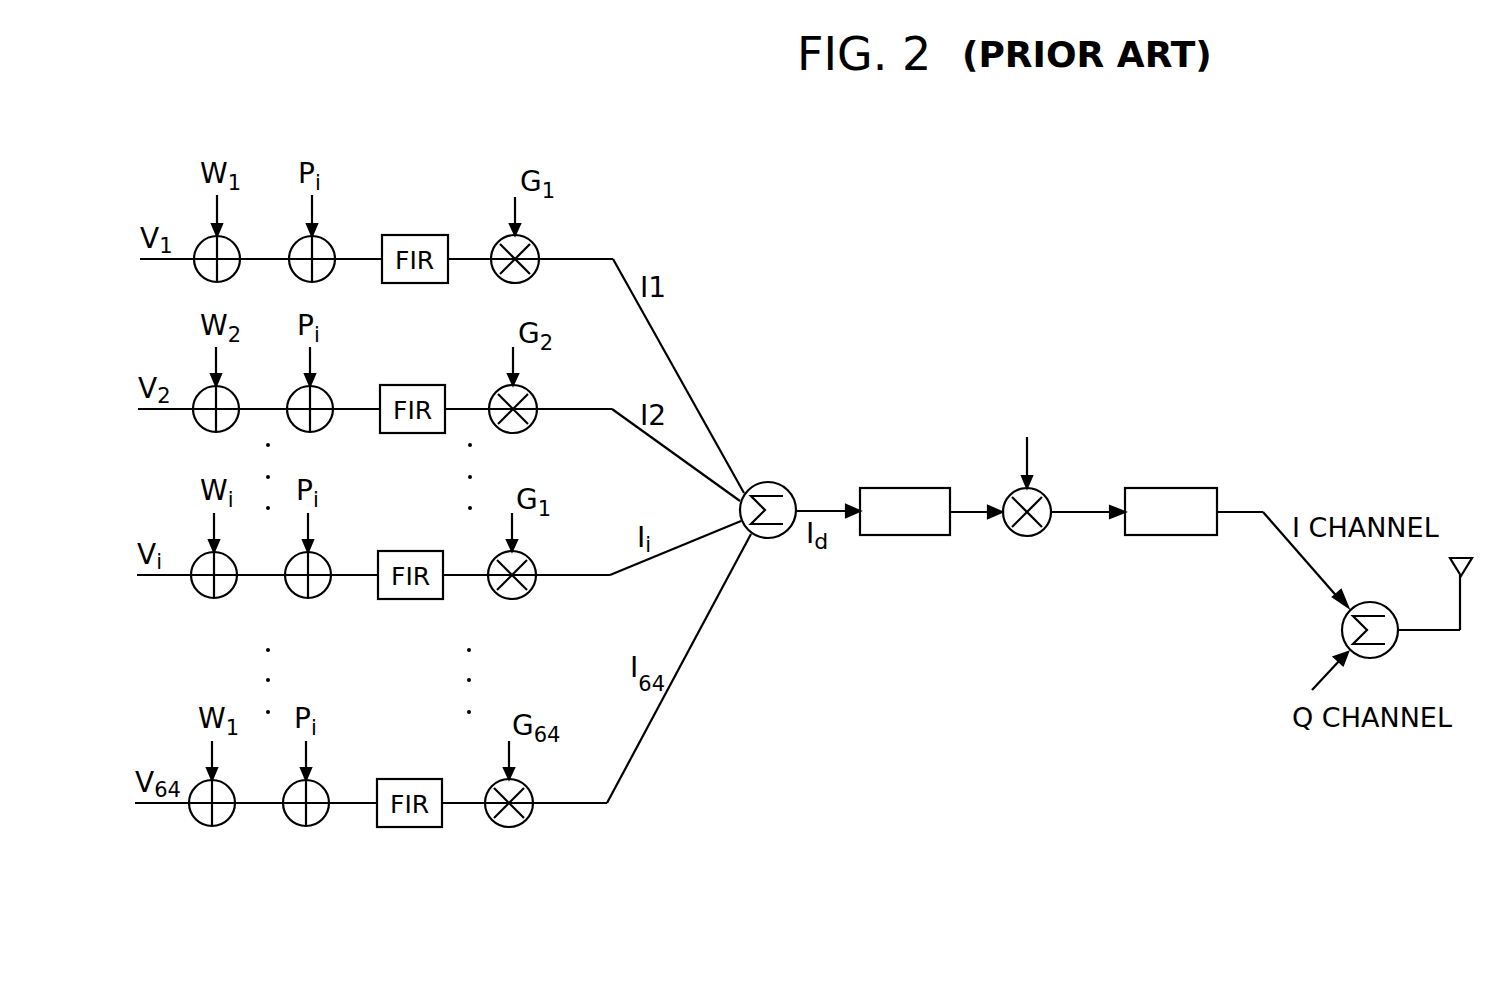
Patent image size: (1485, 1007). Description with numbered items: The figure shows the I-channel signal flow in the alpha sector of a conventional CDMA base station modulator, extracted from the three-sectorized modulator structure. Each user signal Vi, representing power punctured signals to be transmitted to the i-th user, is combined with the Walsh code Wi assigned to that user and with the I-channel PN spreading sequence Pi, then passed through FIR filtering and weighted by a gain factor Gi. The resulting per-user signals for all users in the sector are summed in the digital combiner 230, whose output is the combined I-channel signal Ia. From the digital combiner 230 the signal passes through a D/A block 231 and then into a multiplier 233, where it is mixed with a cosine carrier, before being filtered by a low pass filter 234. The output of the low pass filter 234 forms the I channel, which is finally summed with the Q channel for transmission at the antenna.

The digital combiner 230 is at (771, 483).
The D/A converter 231 is at (882, 488).
The multiplier 233 is at (1031, 537).
The low pass filter 234 is at (1163, 488).